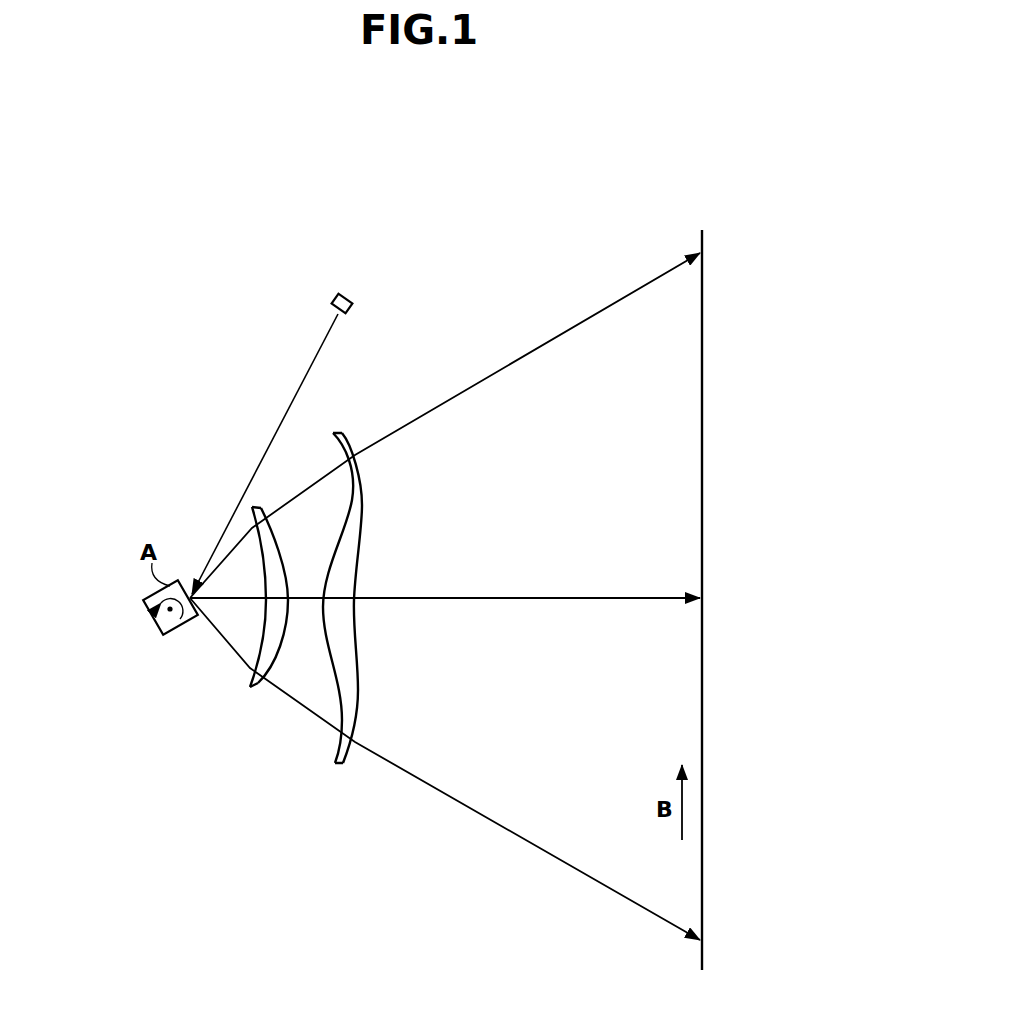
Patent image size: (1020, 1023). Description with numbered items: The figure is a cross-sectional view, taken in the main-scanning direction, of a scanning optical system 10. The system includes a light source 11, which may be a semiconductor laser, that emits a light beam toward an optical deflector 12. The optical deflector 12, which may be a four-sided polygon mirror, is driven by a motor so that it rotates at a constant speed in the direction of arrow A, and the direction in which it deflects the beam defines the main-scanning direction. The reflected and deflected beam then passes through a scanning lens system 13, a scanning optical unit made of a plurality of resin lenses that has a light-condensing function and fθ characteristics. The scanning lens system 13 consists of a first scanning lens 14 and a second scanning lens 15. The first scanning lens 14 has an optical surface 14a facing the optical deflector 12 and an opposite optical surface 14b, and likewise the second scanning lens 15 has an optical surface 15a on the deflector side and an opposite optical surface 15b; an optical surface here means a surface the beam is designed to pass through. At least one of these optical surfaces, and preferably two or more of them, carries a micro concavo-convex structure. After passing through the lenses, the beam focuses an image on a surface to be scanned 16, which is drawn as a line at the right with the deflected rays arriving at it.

The scanning optical system 10 is at (461, 162).
The light source 11 is at (347, 292).
The optical deflector 12 is at (148, 623).
The scanning lens system 13 is at (290, 640).
The first scanning lens 14 is at (286, 630).
The optical surface 14a is at (258, 557).
The optical surface 14b is at (288, 642).
The second scanning lens 15 is at (309, 633).
The optical surface 15a is at (337, 497).
The optical surface 15b is at (358, 623).
The surface to be scanned 16 is at (706, 337).